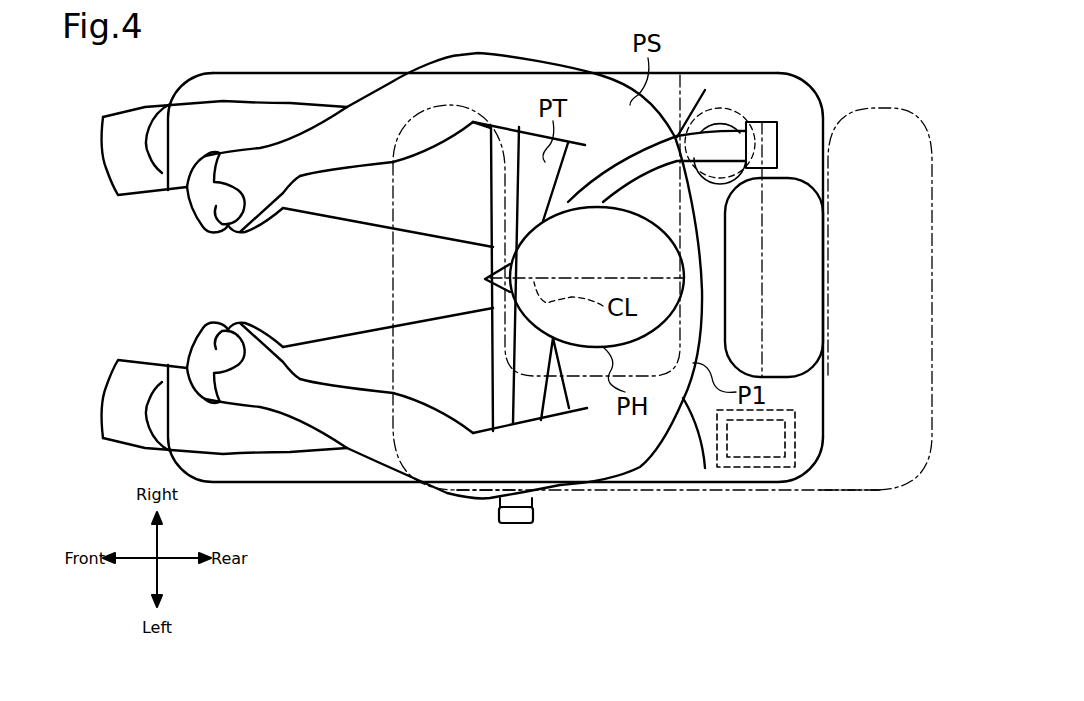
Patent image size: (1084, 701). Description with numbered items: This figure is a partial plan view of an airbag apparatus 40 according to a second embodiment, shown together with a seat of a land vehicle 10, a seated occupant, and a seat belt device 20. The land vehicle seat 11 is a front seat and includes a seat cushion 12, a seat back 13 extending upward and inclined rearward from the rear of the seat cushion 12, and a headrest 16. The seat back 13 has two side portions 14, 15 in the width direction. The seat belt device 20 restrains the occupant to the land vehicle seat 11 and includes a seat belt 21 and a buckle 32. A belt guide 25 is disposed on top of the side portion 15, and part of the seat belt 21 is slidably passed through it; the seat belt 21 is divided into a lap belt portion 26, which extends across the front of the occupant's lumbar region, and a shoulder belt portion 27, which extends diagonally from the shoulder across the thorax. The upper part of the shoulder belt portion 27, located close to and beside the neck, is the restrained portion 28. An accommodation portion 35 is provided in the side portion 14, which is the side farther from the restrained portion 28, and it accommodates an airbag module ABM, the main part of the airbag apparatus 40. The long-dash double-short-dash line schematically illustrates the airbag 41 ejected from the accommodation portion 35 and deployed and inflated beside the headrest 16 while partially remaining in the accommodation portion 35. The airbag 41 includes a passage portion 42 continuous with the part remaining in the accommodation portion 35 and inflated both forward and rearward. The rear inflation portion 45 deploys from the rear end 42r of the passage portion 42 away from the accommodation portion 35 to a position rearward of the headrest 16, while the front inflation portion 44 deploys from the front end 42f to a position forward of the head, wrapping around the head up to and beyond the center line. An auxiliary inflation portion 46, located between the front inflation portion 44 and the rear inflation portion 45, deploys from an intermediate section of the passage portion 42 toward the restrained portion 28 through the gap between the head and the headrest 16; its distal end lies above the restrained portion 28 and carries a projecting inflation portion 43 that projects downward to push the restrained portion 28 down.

The land vehicle 10 is at (535, 312).
The land vehicle seat 11 is at (797, 522).
The seat cushion 12 is at (276, 73).
The seat back 13 is at (823, 428).
The side portion 14 is at (693, 427).
The side portion 15 is at (787, 96).
The headrest 16 is at (807, 228).
The seat belt device 20 is at (627, 201).
The seat belt 21 is at (492, 277).
The belt guide 25 is at (768, 124).
The lap belt portion 26 is at (497, 320).
The shoulder belt portion 27 is at (532, 395).
The restrained portion 28 is at (688, 170).
The buckle 32 is at (513, 516).
The accommodation portion 35 is at (735, 463).
The airbag apparatus 40 is at (614, 325).
The airbag 41 is at (614, 316).
The passage portion 42 is at (612, 492).
The front end 42f is at (483, 497).
The rear end 42r is at (880, 492).
The projecting inflation portion 43 is at (715, 123).
The front inflation portion 44 is at (393, 273).
The rear inflation portion 45 is at (885, 104).
The auxiliary inflation portion 46 is at (762, 248).
The airbag module ABM is at (758, 457).